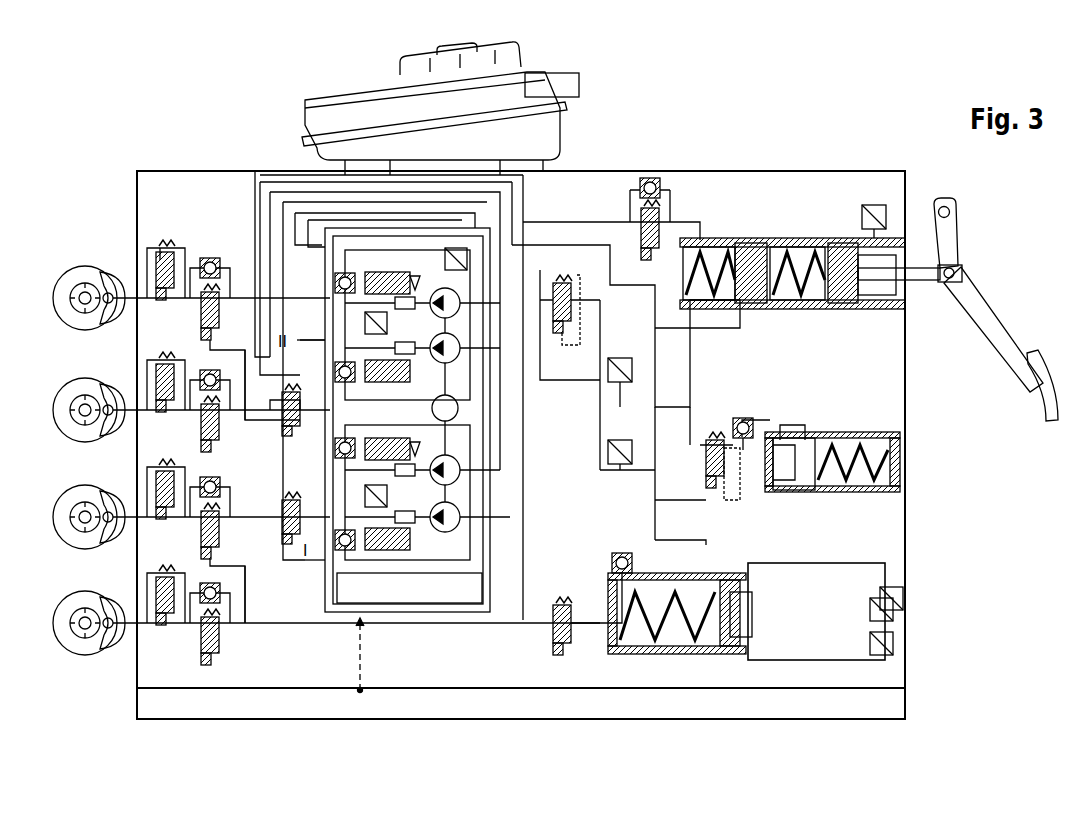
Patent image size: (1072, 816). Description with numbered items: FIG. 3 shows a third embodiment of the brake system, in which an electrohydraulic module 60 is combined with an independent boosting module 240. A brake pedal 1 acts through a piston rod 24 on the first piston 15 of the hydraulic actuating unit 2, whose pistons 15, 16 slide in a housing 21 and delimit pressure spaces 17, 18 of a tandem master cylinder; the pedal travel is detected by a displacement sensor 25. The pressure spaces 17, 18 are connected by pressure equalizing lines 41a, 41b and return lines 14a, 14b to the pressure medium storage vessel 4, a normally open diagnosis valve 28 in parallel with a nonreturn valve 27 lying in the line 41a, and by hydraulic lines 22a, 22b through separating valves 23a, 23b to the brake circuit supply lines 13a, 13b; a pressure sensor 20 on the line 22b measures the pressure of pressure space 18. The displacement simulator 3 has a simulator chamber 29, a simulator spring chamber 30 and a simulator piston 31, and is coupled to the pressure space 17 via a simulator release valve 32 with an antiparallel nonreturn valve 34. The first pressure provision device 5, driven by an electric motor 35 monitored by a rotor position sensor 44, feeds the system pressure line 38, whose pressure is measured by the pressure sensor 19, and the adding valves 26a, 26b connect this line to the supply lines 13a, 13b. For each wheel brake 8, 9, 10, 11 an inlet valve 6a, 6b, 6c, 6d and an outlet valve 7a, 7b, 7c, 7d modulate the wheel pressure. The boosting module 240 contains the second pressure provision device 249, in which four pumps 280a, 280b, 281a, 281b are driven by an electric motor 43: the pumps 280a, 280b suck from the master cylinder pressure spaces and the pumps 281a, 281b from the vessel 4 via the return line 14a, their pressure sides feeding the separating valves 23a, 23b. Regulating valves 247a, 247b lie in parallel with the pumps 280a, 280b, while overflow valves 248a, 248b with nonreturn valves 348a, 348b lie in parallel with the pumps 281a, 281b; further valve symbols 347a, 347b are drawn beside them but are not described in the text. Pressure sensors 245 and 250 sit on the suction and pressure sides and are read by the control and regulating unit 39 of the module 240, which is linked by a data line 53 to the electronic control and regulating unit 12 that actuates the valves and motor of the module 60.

The brake pedal 1 is at (988, 322).
The hydraulic actuating unit 2 is at (800, 236).
The displacement simulator 3 is at (845, 428).
The pressure medium storage vessel 4 is at (348, 105).
The first electrically controllable pressure provision device 5 is at (882, 568).
The inlet valve 6a is at (200, 312).
The inlet valve 6b is at (200, 420).
The inlet valve 6c is at (200, 527).
The inlet valve 6d is at (200, 635).
The outlet valve 7a is at (150, 268).
The outlet valve 7b is at (150, 375).
The outlet valve 7c is at (150, 482).
The outlet valve 7d is at (150, 589).
The wheel brake 8 is at (108, 322).
The wheel brake 9 is at (108, 434).
The wheel brake 10 is at (108, 540).
The wheel brake 11 is at (108, 646).
The electronic control and regulating unit 12 is at (895, 695).
The brake circuit supply line 13a is at (250, 590).
The brake circuit supply line 13b is at (250, 380).
The return line 14a is at (527, 190).
The return line 14b is at (283, 175).
The first piston 15 is at (862, 308).
The second piston 16 is at (752, 305).
The pressure space 17 is at (800, 295).
The pressure space 18 is at (708, 255).
The pressure sensor 19 is at (633, 466).
The pressure sensor 20 is at (633, 378).
The housing 21 is at (790, 175).
The hydraulic line 22a is at (690, 470).
The hydraulic line 22b is at (580, 405).
The separating valve 23a is at (280, 508).
The separating valve 23b is at (280, 420).
The piston rod 24 is at (922, 285).
The displacement sensor 25 is at (890, 205).
The adding valve 26a is at (552, 637).
The adding valve 26b is at (572, 333).
The nonreturn valve 27 is at (638, 186).
The diagnosis valve 28 is at (640, 248).
The simulator chamber 29 is at (765, 492).
The simulator spring chamber 30 is at (876, 485).
The simulator piston 31 is at (795, 435).
The simulator release valve 32 is at (724, 488).
The nonreturn valve 34 is at (740, 418).
The electric motor 35 is at (842, 580).
The system pressure line 38 is at (605, 315).
The control and regulating unit 39 is at (462, 600).
The pressure equalizing line 41a is at (738, 235).
The pressure equalizing line 41b is at (652, 318).
The electric motor 43 is at (460, 400).
The rotor position sensor 44 is at (903, 605).
The data line 53 is at (365, 657).
The electrohydraulic module 60 is at (862, 165).
The boosting module 240 is at (500, 558).
The pressure sensor 245 is at (440, 258).
The regulating valve 247a is at (412, 538).
The regulating valve 247b is at (380, 272).
The overflow valve 248a is at (325, 545).
The overflow valve 248b is at (340, 280).
The second electronically controllable pressure provision device 249 is at (465, 412).
The pressure sensor 250 is at (388, 325).
The pump 280a is at (455, 524).
The pump 280b is at (455, 295).
The pump 281a is at (455, 477).
The pump 281b is at (455, 356).
The check valve 347a is at (370, 438).
The switching valve 347b is at (392, 440).
The nonreturn valve 348a is at (325, 470).
The nonreturn valve 348b is at (325, 350).